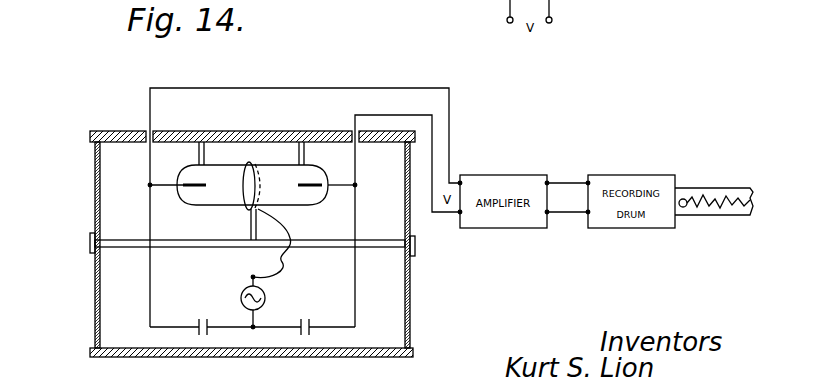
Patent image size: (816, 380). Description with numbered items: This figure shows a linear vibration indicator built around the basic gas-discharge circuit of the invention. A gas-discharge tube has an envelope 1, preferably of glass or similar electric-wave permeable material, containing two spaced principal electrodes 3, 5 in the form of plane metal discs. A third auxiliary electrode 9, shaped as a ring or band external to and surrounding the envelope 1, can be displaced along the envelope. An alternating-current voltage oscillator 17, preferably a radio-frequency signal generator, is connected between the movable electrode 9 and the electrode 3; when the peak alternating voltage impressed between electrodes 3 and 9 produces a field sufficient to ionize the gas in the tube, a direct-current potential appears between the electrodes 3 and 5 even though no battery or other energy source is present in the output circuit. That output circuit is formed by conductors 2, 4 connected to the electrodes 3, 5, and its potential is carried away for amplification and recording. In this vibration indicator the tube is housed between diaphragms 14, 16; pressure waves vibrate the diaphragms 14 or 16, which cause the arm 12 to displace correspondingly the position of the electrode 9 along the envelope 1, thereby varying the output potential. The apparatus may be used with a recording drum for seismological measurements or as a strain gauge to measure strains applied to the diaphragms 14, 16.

The envelope 1 is at (305, 206).
The conductor 2 is at (449, 133).
The electrode 3 is at (190, 188).
The conductor 4 is at (444, 214).
The electrode 5 is at (317, 183).
The third auxiliary electrode 9 is at (244, 214).
The arm 12 is at (100, 249).
The diaphragm 14 is at (95, 173).
The diaphragm 16 is at (410, 282).
The voltage oscillator 17 is at (241, 291).